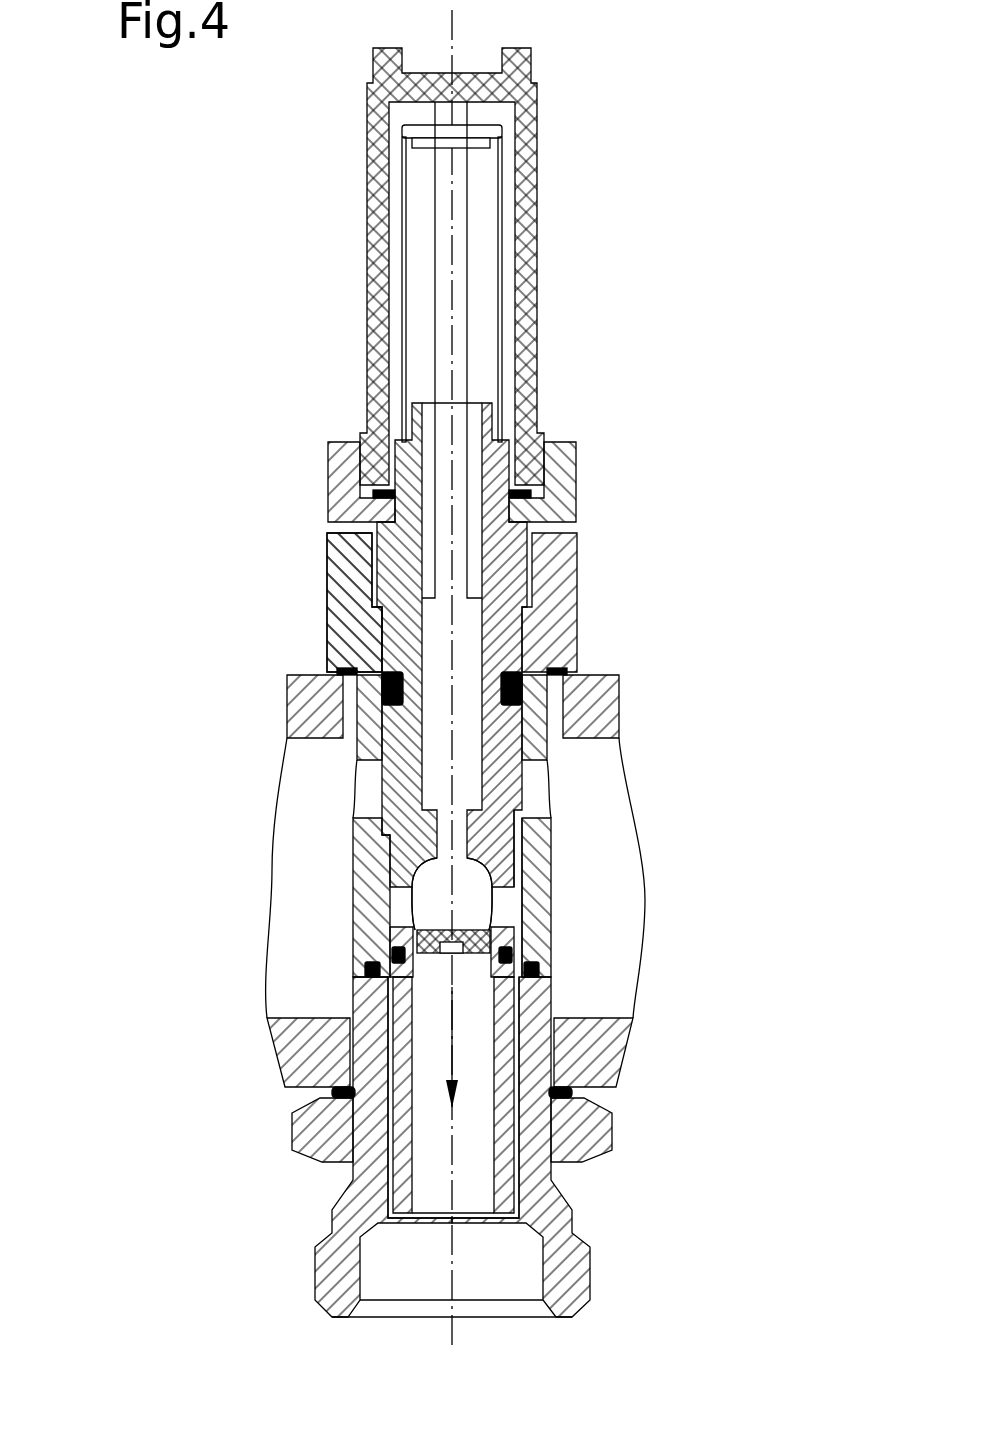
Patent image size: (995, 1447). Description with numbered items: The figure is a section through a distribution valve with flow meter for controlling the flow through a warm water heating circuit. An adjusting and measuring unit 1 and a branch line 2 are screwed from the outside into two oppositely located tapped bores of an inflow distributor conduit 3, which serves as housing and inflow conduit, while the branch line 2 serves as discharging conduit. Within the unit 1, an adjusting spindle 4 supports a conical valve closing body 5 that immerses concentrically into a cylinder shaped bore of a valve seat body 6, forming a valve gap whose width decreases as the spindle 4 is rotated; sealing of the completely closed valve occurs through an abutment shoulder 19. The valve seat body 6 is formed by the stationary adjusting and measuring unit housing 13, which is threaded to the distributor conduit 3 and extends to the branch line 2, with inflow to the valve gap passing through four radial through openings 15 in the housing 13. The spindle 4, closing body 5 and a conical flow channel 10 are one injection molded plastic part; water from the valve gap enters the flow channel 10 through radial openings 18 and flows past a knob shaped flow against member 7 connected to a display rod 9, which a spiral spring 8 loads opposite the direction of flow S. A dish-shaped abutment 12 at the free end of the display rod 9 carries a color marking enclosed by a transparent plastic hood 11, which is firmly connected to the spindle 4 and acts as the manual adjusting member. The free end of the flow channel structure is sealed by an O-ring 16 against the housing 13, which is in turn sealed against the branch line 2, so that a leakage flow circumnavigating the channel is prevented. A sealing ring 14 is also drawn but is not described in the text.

The adjusting and measuring unit 1 is at (252, 640).
The branch line 2 is at (350, 1155).
The inflow distributor conduit 3 is at (590, 712).
The adjusting spindle 4 is at (543, 570).
The valve closing body 5 is at (503, 865).
The valve seat body 6 is at (530, 847).
The flow against member 7 is at (490, 937).
The spiral spring 8 is at (380, 252).
The display rod 9 is at (455, 268).
The flow channel 10 is at (473, 1137).
The transparent plastic hood 11 is at (523, 170).
The dish-shaped abutment 12 is at (413, 130).
The adjusting and measuring unit housing 13 is at (357, 590).
The sealing ring 14 is at (372, 965).
The radial through openings 15 is at (367, 785).
The O-ring 16 is at (517, 958).
The radial openings 18 is at (410, 910).
The abutment shoulder 19 is at (520, 835).